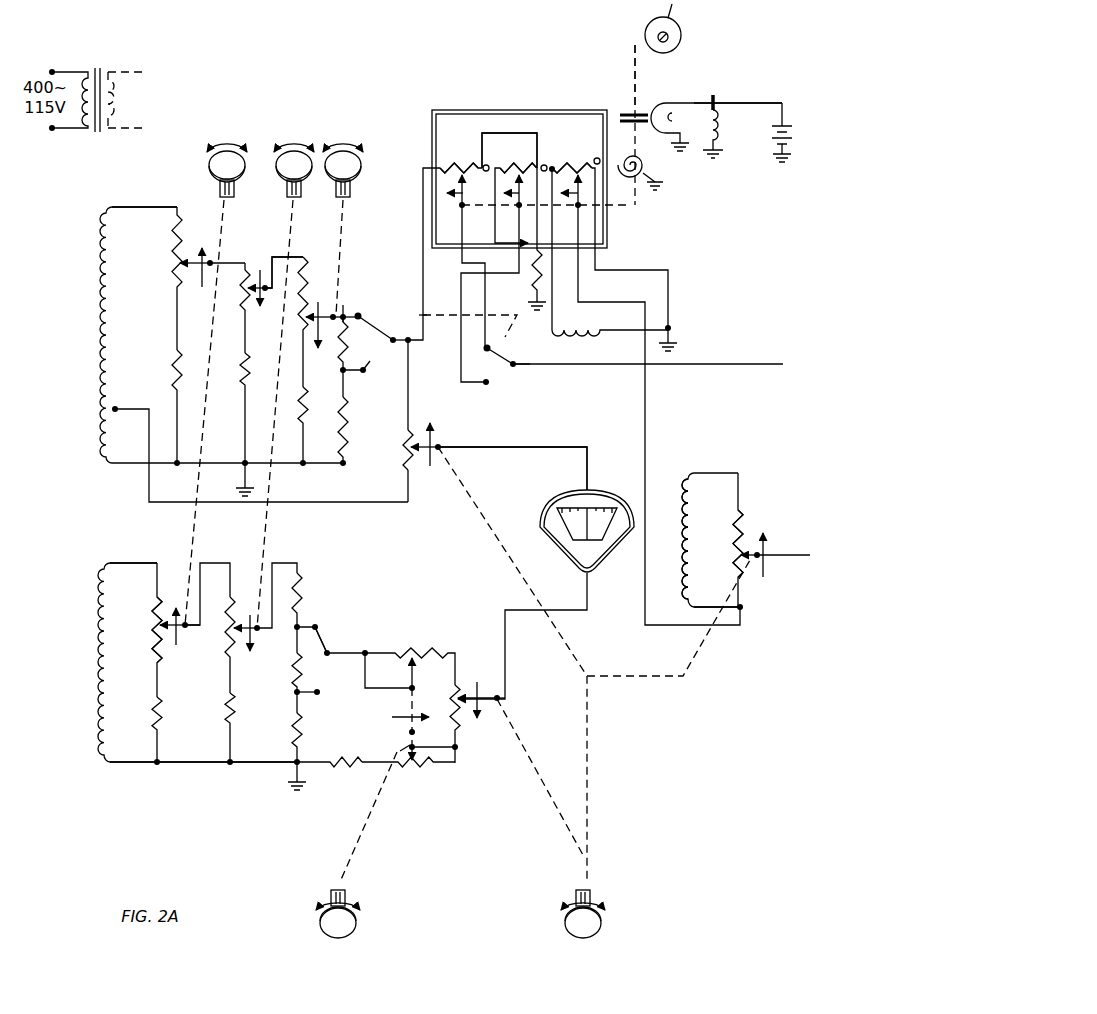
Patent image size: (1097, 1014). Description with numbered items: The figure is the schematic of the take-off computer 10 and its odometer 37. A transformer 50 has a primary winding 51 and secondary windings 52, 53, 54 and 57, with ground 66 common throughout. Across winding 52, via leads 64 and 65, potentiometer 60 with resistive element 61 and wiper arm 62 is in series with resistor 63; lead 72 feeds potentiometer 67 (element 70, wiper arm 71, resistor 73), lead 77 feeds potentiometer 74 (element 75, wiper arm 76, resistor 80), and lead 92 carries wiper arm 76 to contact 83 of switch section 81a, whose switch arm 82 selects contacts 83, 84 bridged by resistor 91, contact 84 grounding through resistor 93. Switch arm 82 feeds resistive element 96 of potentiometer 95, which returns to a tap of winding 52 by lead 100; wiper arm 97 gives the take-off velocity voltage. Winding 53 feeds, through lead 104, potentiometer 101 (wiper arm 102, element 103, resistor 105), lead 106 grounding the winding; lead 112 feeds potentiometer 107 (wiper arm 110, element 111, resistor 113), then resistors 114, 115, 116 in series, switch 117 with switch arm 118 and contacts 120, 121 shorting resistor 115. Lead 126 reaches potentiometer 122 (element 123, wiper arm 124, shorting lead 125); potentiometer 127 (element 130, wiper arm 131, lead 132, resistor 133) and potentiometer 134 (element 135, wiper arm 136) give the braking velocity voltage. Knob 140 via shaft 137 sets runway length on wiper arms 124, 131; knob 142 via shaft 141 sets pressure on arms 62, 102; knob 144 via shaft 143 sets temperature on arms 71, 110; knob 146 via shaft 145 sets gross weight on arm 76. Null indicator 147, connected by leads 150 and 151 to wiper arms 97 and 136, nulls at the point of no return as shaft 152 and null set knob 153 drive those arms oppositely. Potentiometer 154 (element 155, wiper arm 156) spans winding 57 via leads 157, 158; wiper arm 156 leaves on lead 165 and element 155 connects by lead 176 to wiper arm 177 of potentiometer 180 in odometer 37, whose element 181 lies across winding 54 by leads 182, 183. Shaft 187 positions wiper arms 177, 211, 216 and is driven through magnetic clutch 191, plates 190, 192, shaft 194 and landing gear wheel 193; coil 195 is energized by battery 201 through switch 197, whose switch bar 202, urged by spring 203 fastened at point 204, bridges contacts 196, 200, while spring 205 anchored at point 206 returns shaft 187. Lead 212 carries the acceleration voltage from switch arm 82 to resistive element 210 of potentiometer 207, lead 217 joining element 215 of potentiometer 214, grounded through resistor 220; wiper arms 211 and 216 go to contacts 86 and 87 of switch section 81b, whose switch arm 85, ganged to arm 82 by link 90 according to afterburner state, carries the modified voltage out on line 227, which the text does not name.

The computer 10 is at (521, 428).
The odometer 37 is at (447, 114).
The transformer 50 is at (85, 48).
The primary winding 51 is at (72, 72).
The secondary winding 52 is at (100, 290).
The secondary winding 53 is at (98, 740).
The secondary winding 54 is at (610, 345).
The secondary winding 57 is at (682, 558).
The potentiometer 60 is at (133, 247).
The resistive element 61 is at (174, 265).
The wiper arm 62 is at (207, 253).
The resistor 63 is at (179, 364).
The connecting lead 64 is at (136, 207).
The connecting lead 65 is at (126, 467).
The ground 66 is at (238, 490).
The potentiometer 67 is at (247, 249).
The resistive element 70 is at (243, 300).
The wiper arm 71 is at (262, 299).
The connecting lead 72 is at (234, 257).
The resistor 73 is at (243, 378).
The potentiometer 74 is at (307, 258).
The resistive element 75 is at (304, 326).
The wiper arm 76 is at (335, 357).
The connecting lead 77 is at (283, 254).
The resistor 80 is at (300, 408).
The switch section 81a is at (411, 330).
The switch section 81b is at (568, 363).
The switch arm 82 is at (375, 328).
The switch contact 83 is at (358, 313).
The switch contact 84 is at (395, 366).
The switch arm 85 is at (509, 362).
The contact point 86 is at (487, 278).
The contact point 87 is at (487, 384).
The common link 90 is at (424, 315).
The resistor 91 is at (322, 335).
The connecting lead 92 is at (342, 306).
The resistor 93 is at (336, 440).
The potentiometer 95 is at (359, 458).
The resistive element 96 is at (402, 465).
The wiper arm 97 is at (432, 447).
The connecting lead 100 is at (340, 503).
The potentiometer 101 is at (116, 636).
The wiper arm 102 is at (185, 629).
The resistive element 103 is at (156, 606).
The connecting lead 104 is at (150, 563).
The resistor 105 is at (161, 720).
The connecting lead 106 is at (142, 766).
The potentiometer 107 is at (176, 673).
The wiper arm 110 is at (256, 634).
The resistive element 111 is at (232, 604).
The connecting lead 112 is at (202, 562).
The resistor 113 is at (235, 722).
The resistor 114 is at (303, 590).
The resistor 115 is at (292, 672).
The resistor 116 is at (292, 732).
The switch 117 is at (346, 621).
The switch arm 118 is at (318, 628).
The contact point 120 is at (310, 617).
The contact point 121 is at (317, 694).
The potentiometer 122 is at (421, 688).
The resistive element 123 is at (414, 650).
The wiper arm 124 is at (410, 684).
The shorting lead 125 is at (366, 665).
The connecting lead 126 is at (366, 653).
The potentiometer 127 is at (422, 735).
The resistive element 130 is at (418, 770).
The wiper arm 131 is at (400, 751).
The connecting lead 132 is at (420, 752).
The resistor 133 is at (330, 771).
The potentiometer 134 is at (467, 678).
The resistive element 135 is at (458, 722).
The wiper arm 136 is at (483, 702).
The common shaft 137 is at (372, 812).
The knob 140 is at (357, 925).
The common shaft 141 is at (218, 242).
The knob 142 is at (232, 178).
The common shaft 143 is at (289, 245).
The knob 144 is at (301, 190).
The shaft 145 is at (346, 232).
The knob 146 is at (363, 172).
The null indicator 147 is at (606, 494).
The connecting lead 150 is at (564, 447).
The connecting lead 151 is at (588, 605).
The common shaft 152 is at (588, 845).
The null set knob 153 is at (602, 921).
The potentiometer 154 is at (700, 548).
The resistive element 155 is at (733, 522).
The wiper arm 156 is at (762, 544).
The connecting lead 157 is at (702, 474).
The connecting lead 158 is at (690, 610).
The connecting lead 165 is at (803, 558).
The connection lead 176 is at (647, 453).
The wiper arm 177 is at (566, 191).
The potentiometer 180 is at (592, 135).
The resistive element 181 is at (574, 155).
The connecting lead 182 is at (552, 312).
The connecting lead 183 is at (628, 271).
The common shaft 187 is at (630, 206).
The clutch plate 190 is at (622, 106).
The magnetic clutch 191 is at (657, 77).
The clutch plate 192 is at (632, 106).
The aircraft landing gear wheel 193 is at (681, 33).
The shaft 194 is at (632, 68).
The clutch coil 195 is at (682, 113).
The switch contact 196 is at (694, 103).
The switch 197 is at (738, 72).
The switch contact 200 is at (745, 103).
The battery 201 is at (791, 136).
The switch bar 202 is at (713, 95).
The spring 203 is at (722, 128).
The fastening point 204 is at (720, 166).
The return spring 205 is at (641, 158).
The fixed point 206 is at (661, 182).
The potentiometer 207 is at (441, 135).
The resistive element 210 is at (462, 156).
The wiper arm 211 is at (470, 191).
The connecting lead 212 is at (421, 228).
The potentiometer 214 is at (519, 147).
The resistive element 215 is at (523, 157).
The wiper arm 216 is at (527, 191).
The connecting lead 217 is at (512, 131).
The resistor 220 is at (531, 277).
The output conductor 227 is at (745, 368).